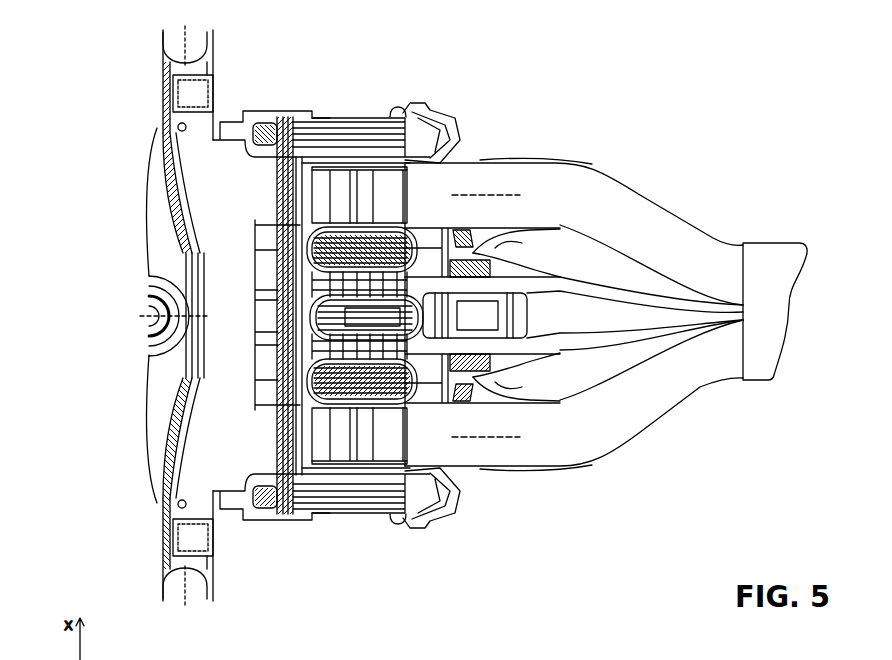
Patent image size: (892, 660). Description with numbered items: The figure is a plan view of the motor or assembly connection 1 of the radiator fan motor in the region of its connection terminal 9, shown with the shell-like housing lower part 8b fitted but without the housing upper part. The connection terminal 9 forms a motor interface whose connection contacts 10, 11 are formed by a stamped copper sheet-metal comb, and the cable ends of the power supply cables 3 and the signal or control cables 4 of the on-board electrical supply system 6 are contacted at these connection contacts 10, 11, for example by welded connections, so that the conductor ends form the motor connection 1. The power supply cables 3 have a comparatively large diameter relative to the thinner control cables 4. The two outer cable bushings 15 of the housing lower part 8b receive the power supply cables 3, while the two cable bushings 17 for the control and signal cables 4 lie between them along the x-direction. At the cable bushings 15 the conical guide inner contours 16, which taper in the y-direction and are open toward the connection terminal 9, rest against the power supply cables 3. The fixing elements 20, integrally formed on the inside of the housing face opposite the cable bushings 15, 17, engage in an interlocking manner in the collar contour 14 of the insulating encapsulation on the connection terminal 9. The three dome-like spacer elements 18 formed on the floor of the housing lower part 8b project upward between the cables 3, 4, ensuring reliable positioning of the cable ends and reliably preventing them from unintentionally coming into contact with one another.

The motor connection 1 is at (748, 100).
The power supply cables 3 is at (620, 190).
The signal or control cables 4 is at (627, 290).
The on-board electrical supply system 6 is at (776, 258).
The housing lower part 8b is at (400, 113).
The connection terminal 9 is at (200, 173).
The connection contact 10 is at (322, 180).
The connection contact 11 is at (262, 255).
The collar contour 14 is at (240, 124).
The cable bushings 15 is at (537, 160).
The guide inner contours 16 is at (465, 143).
The cable bushings 17 is at (527, 295).
The spacer elements 18 is at (200, 193).
The fixing elements 20 is at (263, 118).